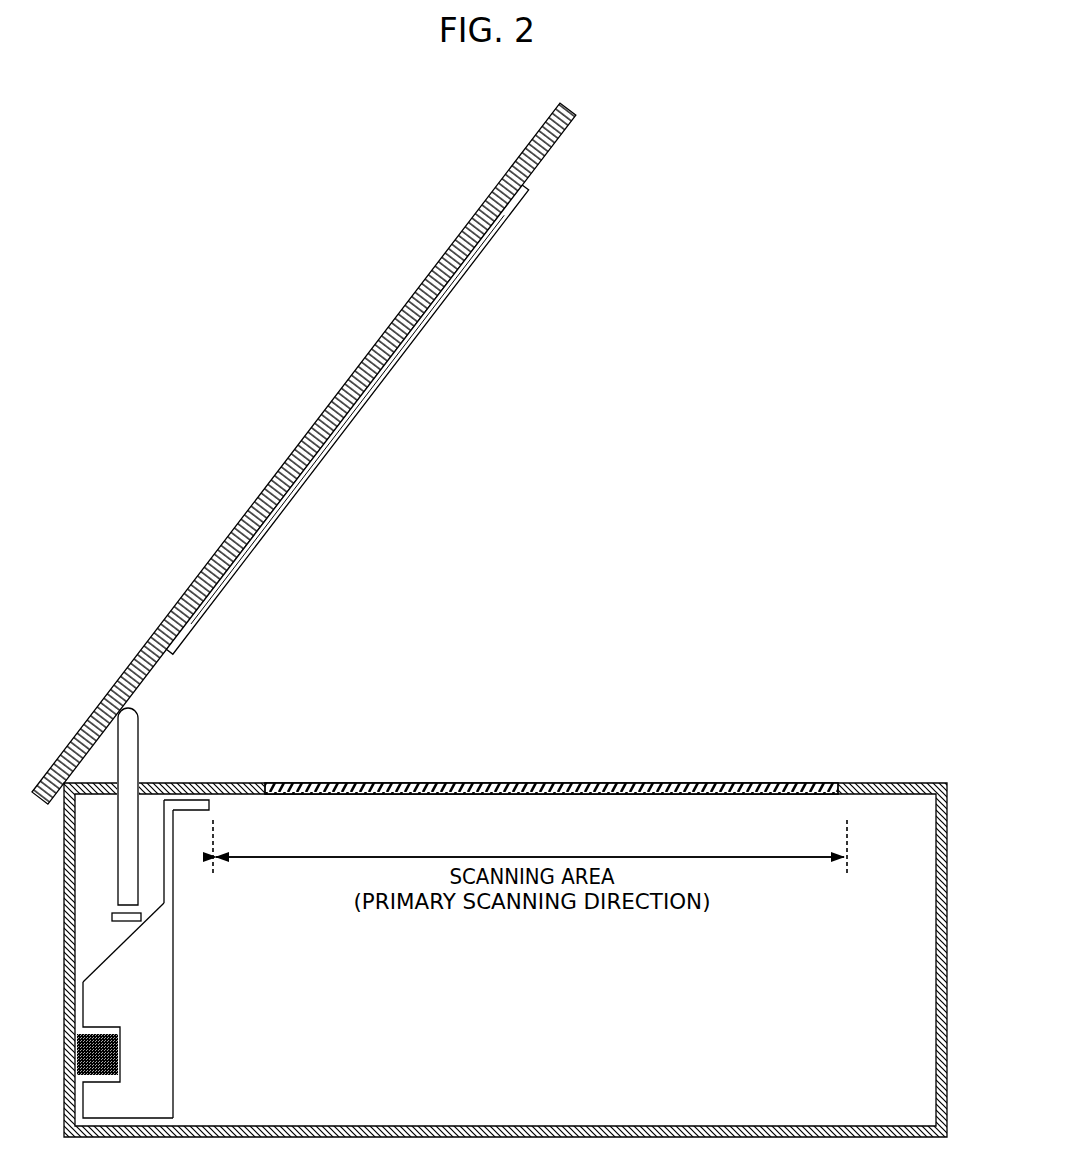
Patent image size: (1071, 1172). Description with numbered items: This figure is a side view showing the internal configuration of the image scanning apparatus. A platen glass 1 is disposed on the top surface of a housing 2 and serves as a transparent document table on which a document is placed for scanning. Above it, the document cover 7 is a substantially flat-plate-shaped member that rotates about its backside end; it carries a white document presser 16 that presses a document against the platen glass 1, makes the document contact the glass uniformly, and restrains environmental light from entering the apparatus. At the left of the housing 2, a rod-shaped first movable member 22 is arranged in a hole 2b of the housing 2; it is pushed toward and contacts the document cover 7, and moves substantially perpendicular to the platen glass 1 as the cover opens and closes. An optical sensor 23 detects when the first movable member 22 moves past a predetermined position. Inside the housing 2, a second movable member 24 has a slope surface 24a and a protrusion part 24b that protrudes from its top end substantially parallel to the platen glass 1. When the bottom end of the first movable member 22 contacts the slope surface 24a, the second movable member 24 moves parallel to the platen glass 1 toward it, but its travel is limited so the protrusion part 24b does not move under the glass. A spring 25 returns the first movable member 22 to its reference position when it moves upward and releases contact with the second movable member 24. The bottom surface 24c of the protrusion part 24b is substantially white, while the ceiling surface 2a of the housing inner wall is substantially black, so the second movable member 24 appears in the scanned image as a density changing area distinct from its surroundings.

The platen glass 1 is at (792, 794).
The housing 2 is at (888, 794).
The ceiling surface 2a is at (251, 803).
The hole 2b is at (112, 798).
The document cover 7 is at (571, 111).
The document presser 16 is at (488, 249).
The first movable member 22 is at (130, 762).
The optical sensor 23 is at (115, 913).
The second movable member 24 is at (168, 930).
The slope surface 24a is at (139, 934).
The protrusion part 24b is at (193, 808).
The bottom surface 24c is at (190, 819).
The spring 25 is at (82, 1035).